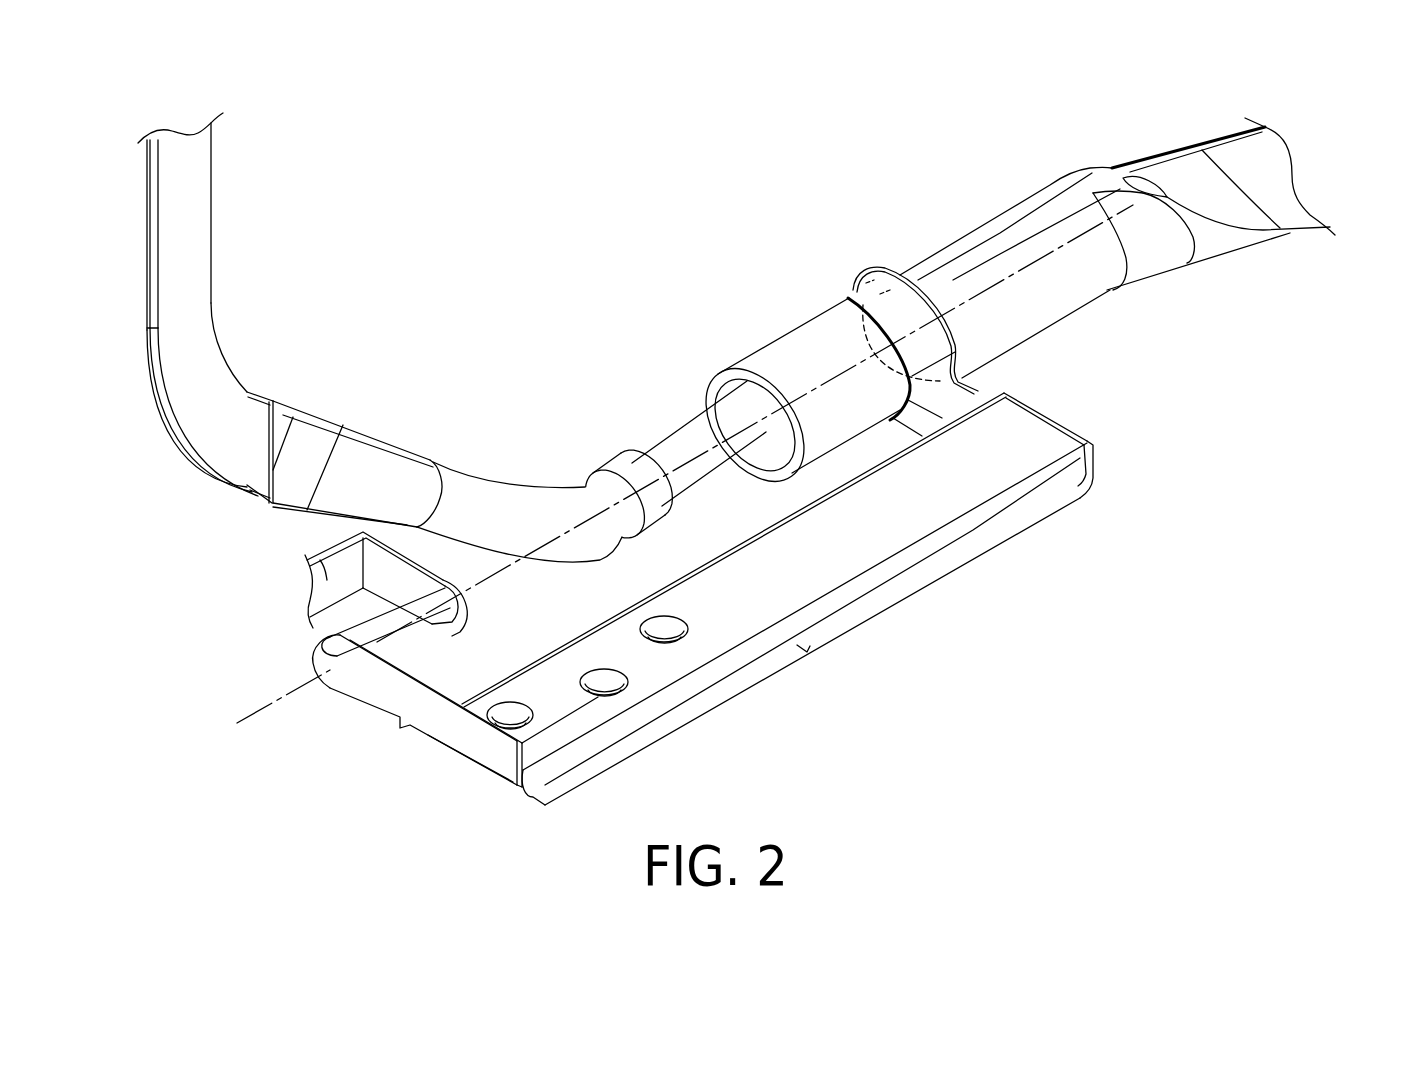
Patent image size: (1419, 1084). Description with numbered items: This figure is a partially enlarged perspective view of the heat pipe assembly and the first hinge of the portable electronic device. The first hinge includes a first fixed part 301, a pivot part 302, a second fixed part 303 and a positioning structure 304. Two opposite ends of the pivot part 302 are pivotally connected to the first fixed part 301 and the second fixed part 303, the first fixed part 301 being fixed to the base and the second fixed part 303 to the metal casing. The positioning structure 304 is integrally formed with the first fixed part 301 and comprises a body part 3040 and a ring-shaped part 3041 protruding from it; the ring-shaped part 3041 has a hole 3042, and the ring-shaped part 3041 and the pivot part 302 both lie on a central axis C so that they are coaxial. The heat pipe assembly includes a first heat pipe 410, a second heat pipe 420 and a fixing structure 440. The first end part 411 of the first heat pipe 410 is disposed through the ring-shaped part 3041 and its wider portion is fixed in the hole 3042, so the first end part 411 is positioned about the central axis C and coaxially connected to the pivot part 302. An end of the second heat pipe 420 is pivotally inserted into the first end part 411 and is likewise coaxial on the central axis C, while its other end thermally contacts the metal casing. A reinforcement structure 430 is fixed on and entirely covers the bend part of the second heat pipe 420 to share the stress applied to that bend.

The first fixed part 301 is at (727, 631).
The pivot part 302 is at (405, 642).
The second fixed part 303 is at (322, 570).
The positioning structure 304 is at (869, 414).
The body part 3040 is at (990, 373).
The ring-shaped part 3041 is at (962, 335).
The hole 3042 is at (885, 297).
The first heat pipe 410 is at (1292, 210).
The first end part 411 is at (1067, 288).
The second heat pipe 420 is at (185, 202).
The reinforcement structure 430 is at (353, 443).
The fixing structure 440 is at (760, 357).
The central axis C is at (640, 446).